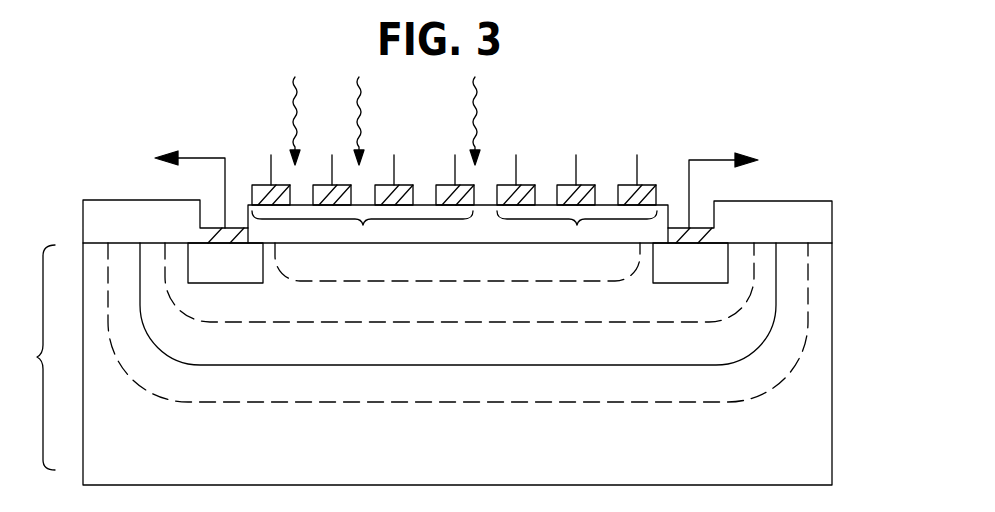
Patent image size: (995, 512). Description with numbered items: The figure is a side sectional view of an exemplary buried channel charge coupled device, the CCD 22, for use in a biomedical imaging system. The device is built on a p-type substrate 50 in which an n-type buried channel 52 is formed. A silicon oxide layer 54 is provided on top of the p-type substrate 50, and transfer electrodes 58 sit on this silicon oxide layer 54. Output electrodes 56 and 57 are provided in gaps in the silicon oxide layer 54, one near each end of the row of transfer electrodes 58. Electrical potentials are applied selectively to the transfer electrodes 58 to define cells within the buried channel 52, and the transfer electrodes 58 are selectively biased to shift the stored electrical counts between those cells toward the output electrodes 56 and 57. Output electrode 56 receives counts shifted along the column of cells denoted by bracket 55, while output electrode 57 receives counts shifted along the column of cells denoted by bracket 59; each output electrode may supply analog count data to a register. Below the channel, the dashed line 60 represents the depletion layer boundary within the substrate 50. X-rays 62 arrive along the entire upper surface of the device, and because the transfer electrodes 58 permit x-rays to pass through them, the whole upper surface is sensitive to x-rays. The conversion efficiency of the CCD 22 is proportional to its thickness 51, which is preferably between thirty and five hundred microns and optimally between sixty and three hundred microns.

The CCD 22 is at (448, 281).
The p-type substrate 50 is at (466, 460).
The thickness 51 is at (31, 357).
The n-type buried channel 52 is at (444, 314).
The silicon oxide layer 54 is at (125, 200).
The bracket 55 is at (577, 226).
The output electrode 56 is at (686, 228).
The output electrode 57 is at (239, 228).
The transfer electrodes 58 is at (287, 185).
The bracket 59 is at (366, 226).
The depletion layer boundary 60 is at (677, 404).
The x-rays 62 is at (304, 108).